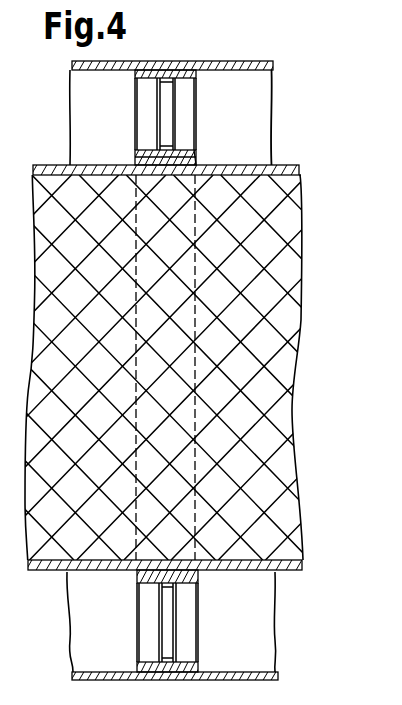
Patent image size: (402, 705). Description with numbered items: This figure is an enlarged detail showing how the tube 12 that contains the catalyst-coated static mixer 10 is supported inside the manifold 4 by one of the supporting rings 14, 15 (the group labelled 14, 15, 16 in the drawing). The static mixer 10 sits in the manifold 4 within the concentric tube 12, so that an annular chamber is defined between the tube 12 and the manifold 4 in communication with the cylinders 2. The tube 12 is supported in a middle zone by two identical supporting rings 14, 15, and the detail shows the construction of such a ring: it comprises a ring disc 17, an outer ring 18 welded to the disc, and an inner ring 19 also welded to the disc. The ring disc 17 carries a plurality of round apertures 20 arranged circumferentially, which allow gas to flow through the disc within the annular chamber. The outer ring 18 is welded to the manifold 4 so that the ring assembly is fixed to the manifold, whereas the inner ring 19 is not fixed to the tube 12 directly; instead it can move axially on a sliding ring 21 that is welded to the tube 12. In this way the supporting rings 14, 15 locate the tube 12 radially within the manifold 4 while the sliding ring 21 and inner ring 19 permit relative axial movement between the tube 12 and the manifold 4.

The cylinders 2 is at (350, 307).
The manifold 4 is at (205, 90).
The static mixer 10 is at (265, 247).
The tube 12 is at (287, 172).
The supporting ring 14 is at (277, 50).
The supporting ring 15 is at (271, 117).
The outer sleeve wall 16 is at (171, 622).
The ring disc 17 is at (157, 97).
The outer ring 18 is at (147, 61).
The inner ring 19 is at (153, 156).
The round apertures 20 is at (167, 130).
The sliding ring 21 is at (197, 162).